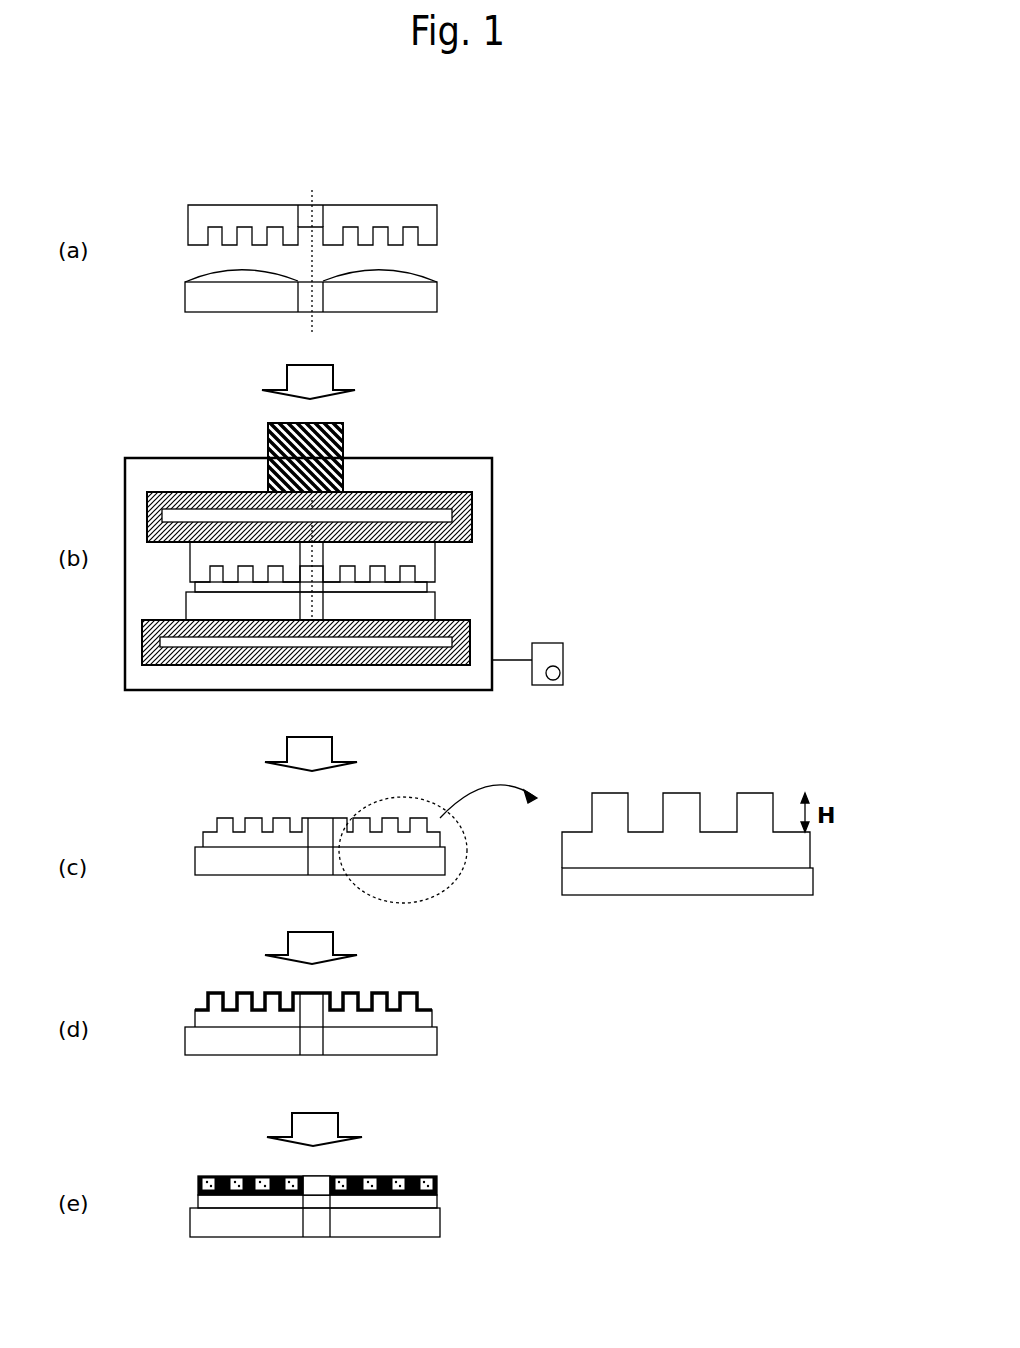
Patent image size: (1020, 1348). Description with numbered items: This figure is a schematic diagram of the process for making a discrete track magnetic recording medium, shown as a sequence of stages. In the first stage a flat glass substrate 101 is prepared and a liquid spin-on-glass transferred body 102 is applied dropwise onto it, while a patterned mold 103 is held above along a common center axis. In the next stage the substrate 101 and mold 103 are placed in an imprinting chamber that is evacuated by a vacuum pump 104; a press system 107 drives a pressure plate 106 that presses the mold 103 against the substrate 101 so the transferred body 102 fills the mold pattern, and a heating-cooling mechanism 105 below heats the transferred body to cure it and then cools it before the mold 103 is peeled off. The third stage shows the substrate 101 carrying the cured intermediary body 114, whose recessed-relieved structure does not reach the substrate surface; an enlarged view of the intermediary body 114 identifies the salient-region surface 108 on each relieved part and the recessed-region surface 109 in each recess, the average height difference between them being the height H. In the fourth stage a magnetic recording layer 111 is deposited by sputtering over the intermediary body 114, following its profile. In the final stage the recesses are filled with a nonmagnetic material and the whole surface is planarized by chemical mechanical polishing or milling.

The substrate 101 is at (422, 298).
The transferred body 102 is at (410, 278).
The mold 103 is at (420, 222).
The vacuum pump 104 is at (552, 653).
The heating-cooling mechanism 105 is at (425, 643).
The pressure plate 106 is at (470, 503).
The press system 107 is at (340, 447).
The salient-region surface 108 is at (775, 793).
The recessed-region surface 109 is at (813, 835).
The magnetic recording layer 111 is at (408, 995).
The intermediary body 114 is at (223, 828).